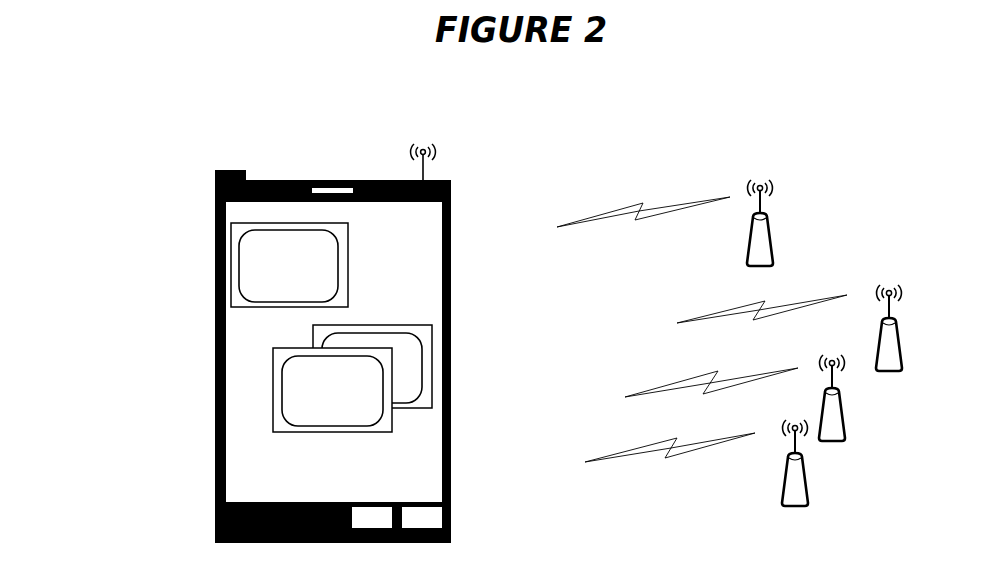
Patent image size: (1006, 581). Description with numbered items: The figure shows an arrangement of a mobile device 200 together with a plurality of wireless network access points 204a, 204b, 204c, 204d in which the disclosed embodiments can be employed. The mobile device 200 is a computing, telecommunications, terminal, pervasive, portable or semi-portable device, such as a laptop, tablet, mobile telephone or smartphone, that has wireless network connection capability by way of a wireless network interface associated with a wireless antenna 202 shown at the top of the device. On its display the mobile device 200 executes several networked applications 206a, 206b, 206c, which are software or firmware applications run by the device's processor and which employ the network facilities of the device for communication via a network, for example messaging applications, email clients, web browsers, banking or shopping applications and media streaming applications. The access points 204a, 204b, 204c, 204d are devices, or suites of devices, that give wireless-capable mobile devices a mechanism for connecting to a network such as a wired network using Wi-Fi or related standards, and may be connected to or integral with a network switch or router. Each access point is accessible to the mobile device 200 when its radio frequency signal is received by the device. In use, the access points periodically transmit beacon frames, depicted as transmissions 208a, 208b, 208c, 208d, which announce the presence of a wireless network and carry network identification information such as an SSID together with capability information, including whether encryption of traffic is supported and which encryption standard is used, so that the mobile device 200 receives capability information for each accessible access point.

The mobile device 200 is at (215, 246).
The wireless antenna 202 is at (408, 153).
The wireless network access point 204a is at (862, 247).
The wireless network access point 204b is at (994, 360).
The wireless network access point 204c is at (937, 436).
The wireless network access point 204d is at (899, 500).
The networked application 206a is at (348, 265).
The networked application 206b is at (535, 353).
The networked application 206c is at (392, 426).
The beacon frame transmission 208a is at (676, 159).
The beacon frame transmission 208b is at (698, 320).
The beacon frame transmission 208c is at (650, 392).
The beacon frame transmission 208d is at (668, 447).